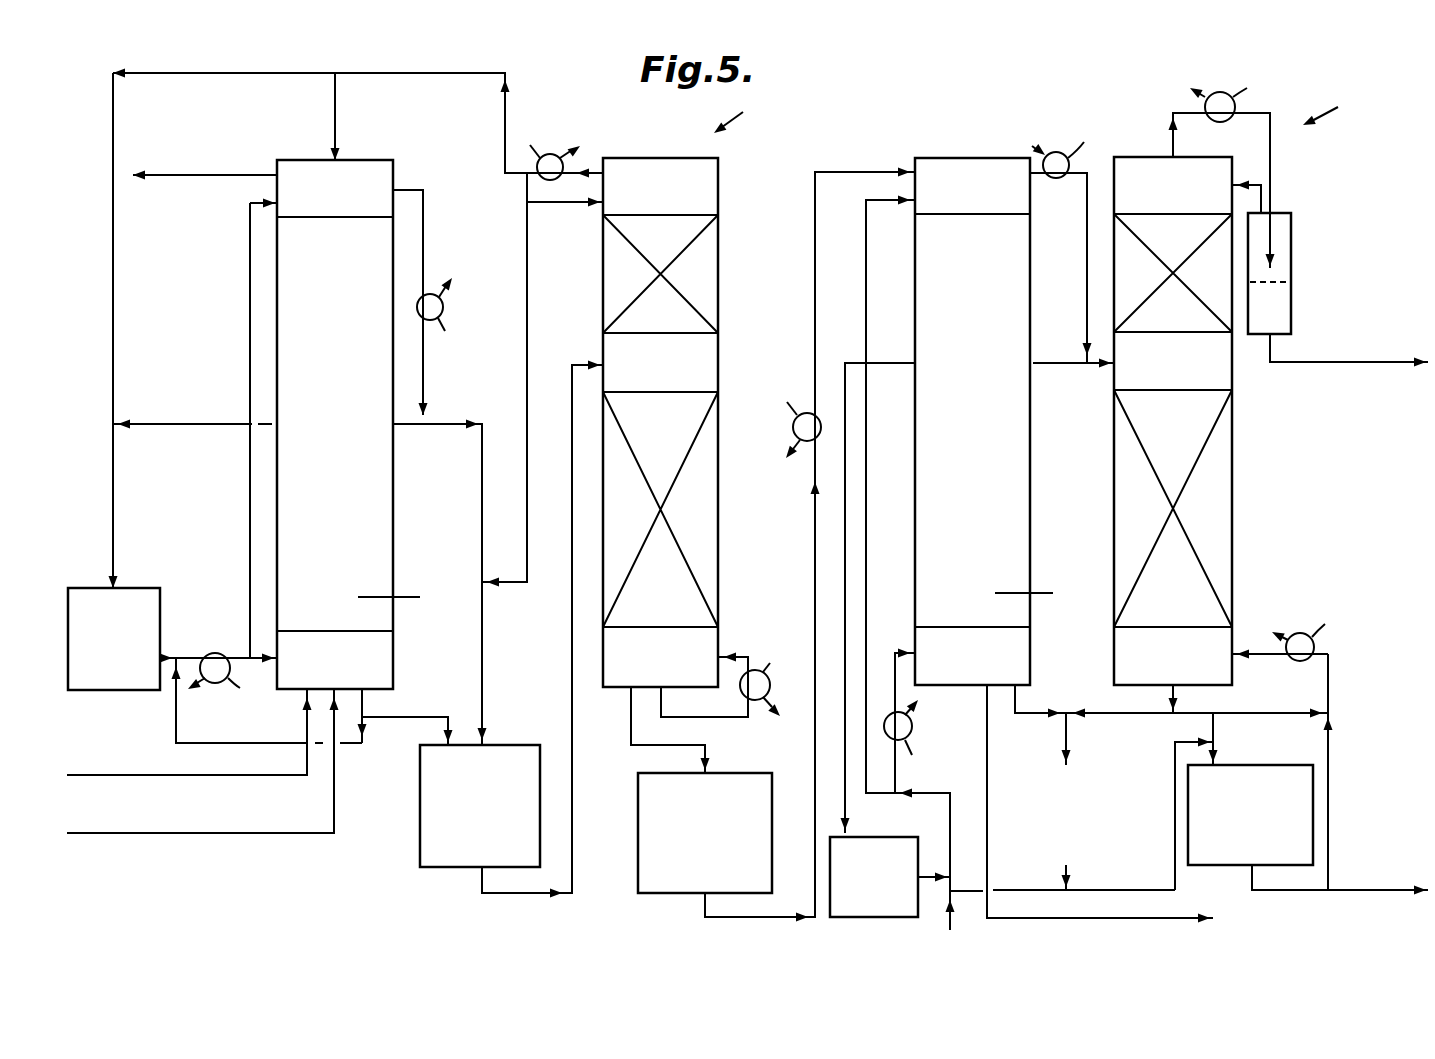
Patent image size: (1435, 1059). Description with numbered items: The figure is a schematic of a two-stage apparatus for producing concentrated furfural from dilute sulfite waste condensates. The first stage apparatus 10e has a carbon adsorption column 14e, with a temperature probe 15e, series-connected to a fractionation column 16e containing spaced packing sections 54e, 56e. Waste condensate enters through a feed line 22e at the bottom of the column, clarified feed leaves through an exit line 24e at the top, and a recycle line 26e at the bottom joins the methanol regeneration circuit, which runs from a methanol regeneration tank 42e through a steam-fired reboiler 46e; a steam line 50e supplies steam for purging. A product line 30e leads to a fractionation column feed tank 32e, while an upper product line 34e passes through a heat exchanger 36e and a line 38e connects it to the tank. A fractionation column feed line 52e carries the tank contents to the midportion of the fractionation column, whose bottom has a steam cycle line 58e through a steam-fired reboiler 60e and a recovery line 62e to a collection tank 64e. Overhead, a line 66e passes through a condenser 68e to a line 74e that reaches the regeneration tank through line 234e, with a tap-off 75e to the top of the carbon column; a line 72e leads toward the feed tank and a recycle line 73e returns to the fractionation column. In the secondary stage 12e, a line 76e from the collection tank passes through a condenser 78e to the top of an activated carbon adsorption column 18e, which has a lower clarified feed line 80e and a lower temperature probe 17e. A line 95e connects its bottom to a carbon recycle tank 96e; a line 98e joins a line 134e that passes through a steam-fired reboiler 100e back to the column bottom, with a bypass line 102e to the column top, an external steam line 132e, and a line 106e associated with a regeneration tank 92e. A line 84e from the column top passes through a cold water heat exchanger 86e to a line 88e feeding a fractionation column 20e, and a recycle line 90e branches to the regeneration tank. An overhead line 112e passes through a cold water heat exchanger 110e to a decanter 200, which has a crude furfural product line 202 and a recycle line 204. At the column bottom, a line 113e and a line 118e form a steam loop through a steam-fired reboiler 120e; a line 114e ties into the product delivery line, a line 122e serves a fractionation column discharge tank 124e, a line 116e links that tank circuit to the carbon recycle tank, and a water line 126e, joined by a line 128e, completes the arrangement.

The first stage apparatus 10e is at (750, 120).
The secondary stage 12e is at (1339, 106).
The carbon adsorption column 14e is at (393, 167).
The temperature probe 15e is at (408, 597).
The fractionation column 16e is at (715, 183).
The lower temperature probe 17e is at (1048, 593).
The activated carbon adsorption column 18e is at (945, 165).
The fractionation column 20e is at (1225, 165).
The feed line 22e is at (175, 835).
The exit line 24e is at (213, 178).
The recycle line 26e is at (212, 743).
The product line 30e is at (393, 717).
The fractionation column feed tank 32e is at (503, 745).
The upper product line 34e is at (428, 218).
The heat exchanger 36e is at (443, 313).
The line 38e is at (482, 495).
The methanol regeneration tank 42e is at (138, 588).
The steam-fired reboiler 46e is at (213, 653).
The steam line 50e is at (170, 777).
The fractionation column feed line 52e is at (590, 758).
The packing section 54e is at (712, 268).
The packing section 56e is at (710, 517).
The steam cycle line 58e is at (730, 717).
The steam-fired reboiler 60e is at (770, 680).
The recovery line 62e is at (643, 745).
The collection tank 64e is at (642, 890).
The line 66e is at (595, 165).
The condenser 68e is at (538, 167).
The line 72e is at (528, 317).
The recycle line 73e is at (568, 204).
The line 74e is at (390, 73).
The tap-off 75e is at (337, 105).
The line 76e is at (813, 540).
The condenser 78e is at (796, 432).
The lower clarified feed line 80e is at (1185, 918).
The line 84e is at (1087, 237).
The cold water heat exchanger 86e is at (1050, 153).
The line 88e is at (1085, 367).
The recycle line 90e is at (875, 363).
The regeneration tank 92e is at (858, 837).
The line 95e is at (1030, 713).
The carbon recycle tank 96e is at (1033, 752).
The line 98e is at (1003, 891).
The steam-fired reboiler 100e is at (910, 722).
The bypass line 102e is at (880, 553).
The line 106e is at (922, 866).
The cold water heat exchanger 110e is at (1215, 92).
The overhead line 112e is at (1175, 142).
The line 113e is at (1176, 697).
The line 114e is at (1128, 716).
The line 116e is at (1172, 862).
The line 118e is at (1300, 712).
The steam-fired reboiler 120e is at (1314, 648).
The line 122e is at (1215, 733).
The fractionation column discharge tank 124e is at (1252, 765).
The water line 126e is at (1350, 892).
The line 128e is at (1330, 775).
The external steam line 132e is at (948, 925).
The line 134e is at (962, 796).
The decanter 200 is at (1293, 235).
The crude furfural product line 202 is at (1342, 363).
The recycle line 204 is at (1262, 198).
The line 234e is at (113, 343).